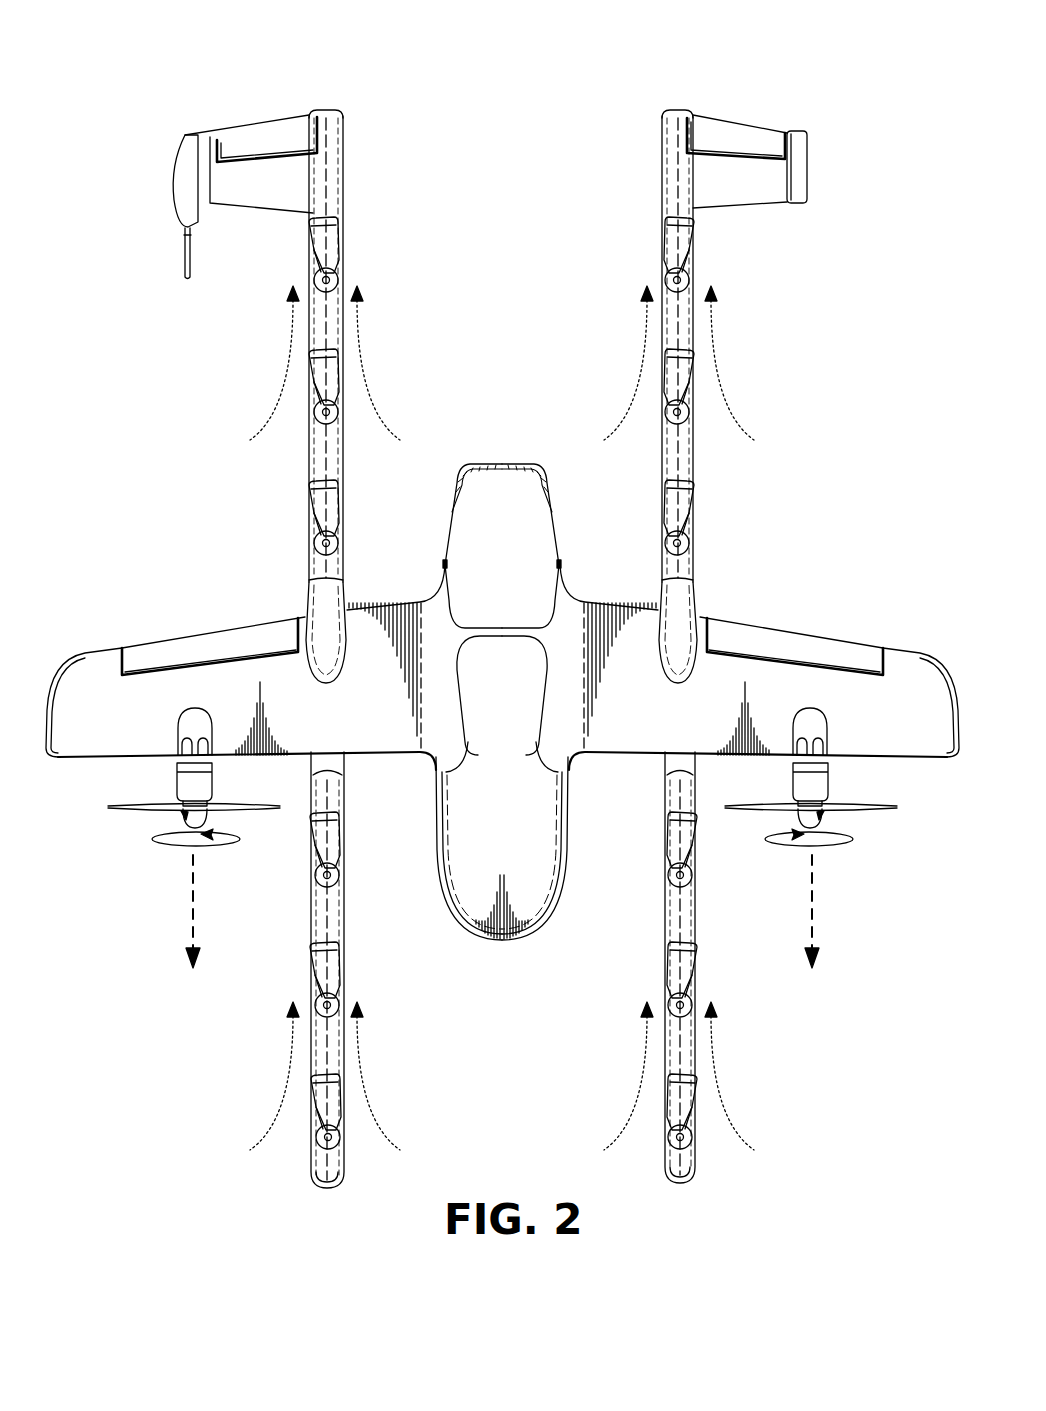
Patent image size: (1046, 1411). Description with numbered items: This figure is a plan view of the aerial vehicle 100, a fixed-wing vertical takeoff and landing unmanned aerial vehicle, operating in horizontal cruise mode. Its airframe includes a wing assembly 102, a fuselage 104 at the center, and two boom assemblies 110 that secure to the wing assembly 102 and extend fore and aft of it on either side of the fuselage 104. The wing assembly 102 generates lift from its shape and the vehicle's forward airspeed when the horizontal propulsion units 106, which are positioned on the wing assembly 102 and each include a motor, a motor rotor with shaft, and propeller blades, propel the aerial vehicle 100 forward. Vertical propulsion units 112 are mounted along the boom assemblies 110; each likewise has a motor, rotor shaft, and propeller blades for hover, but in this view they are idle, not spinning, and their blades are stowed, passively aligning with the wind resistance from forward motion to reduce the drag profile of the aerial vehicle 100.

The aerial vehicle 100 is at (118, 338).
The wing assembly 102 is at (152, 714).
The fuselage 104 is at (518, 442).
The horizontal propulsion units 106 is at (150, 822).
The boom assemblies 110 is at (338, 112).
The vertical propulsion units 112 is at (294, 498).